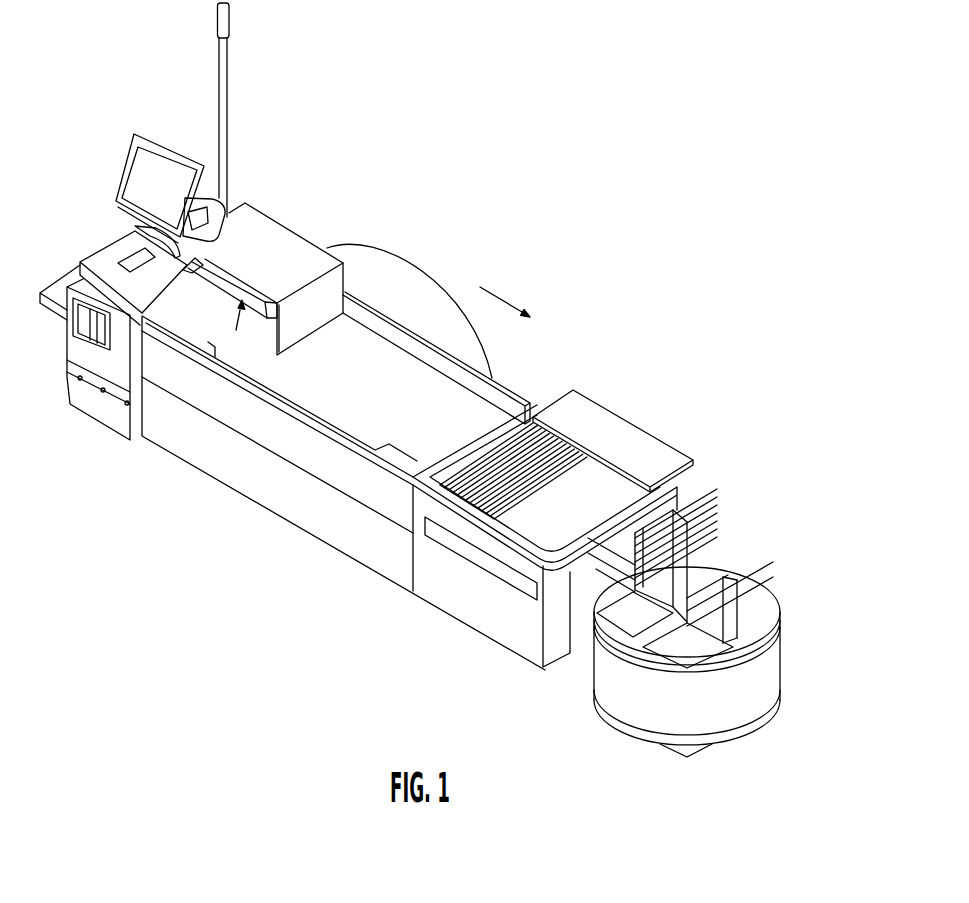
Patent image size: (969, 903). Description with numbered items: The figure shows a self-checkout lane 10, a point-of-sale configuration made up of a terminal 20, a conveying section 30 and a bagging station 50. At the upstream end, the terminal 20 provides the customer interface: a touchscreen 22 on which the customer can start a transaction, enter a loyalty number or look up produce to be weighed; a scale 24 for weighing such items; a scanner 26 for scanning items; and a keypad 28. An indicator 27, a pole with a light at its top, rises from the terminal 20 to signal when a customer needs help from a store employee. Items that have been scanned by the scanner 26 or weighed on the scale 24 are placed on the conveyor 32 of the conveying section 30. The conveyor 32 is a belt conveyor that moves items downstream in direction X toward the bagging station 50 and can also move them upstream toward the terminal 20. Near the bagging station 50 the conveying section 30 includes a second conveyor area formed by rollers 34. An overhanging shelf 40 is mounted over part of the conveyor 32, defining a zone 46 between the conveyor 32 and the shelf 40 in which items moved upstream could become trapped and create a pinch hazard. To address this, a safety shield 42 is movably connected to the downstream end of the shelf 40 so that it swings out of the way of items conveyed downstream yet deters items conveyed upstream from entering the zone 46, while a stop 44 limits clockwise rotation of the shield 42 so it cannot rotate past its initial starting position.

The self-checkout lane 10 is at (538, 136).
The terminal 20 is at (101, 128).
The touchscreen 22 is at (154, 132).
The scale 24 is at (105, 250).
The scanner 26 is at (137, 228).
The indicator 27 is at (231, 22).
The keypad 28 is at (211, 195).
The conveying section 30 is at (506, 362).
The conveyor 32 is at (212, 328).
The rollers 34 is at (477, 508).
The overhanging shelf 40 is at (302, 245).
The safety shield 42 is at (315, 320).
The stop 44 is at (270, 318).
The zone 46 is at (238, 330).
The bagging station 50 is at (716, 499).